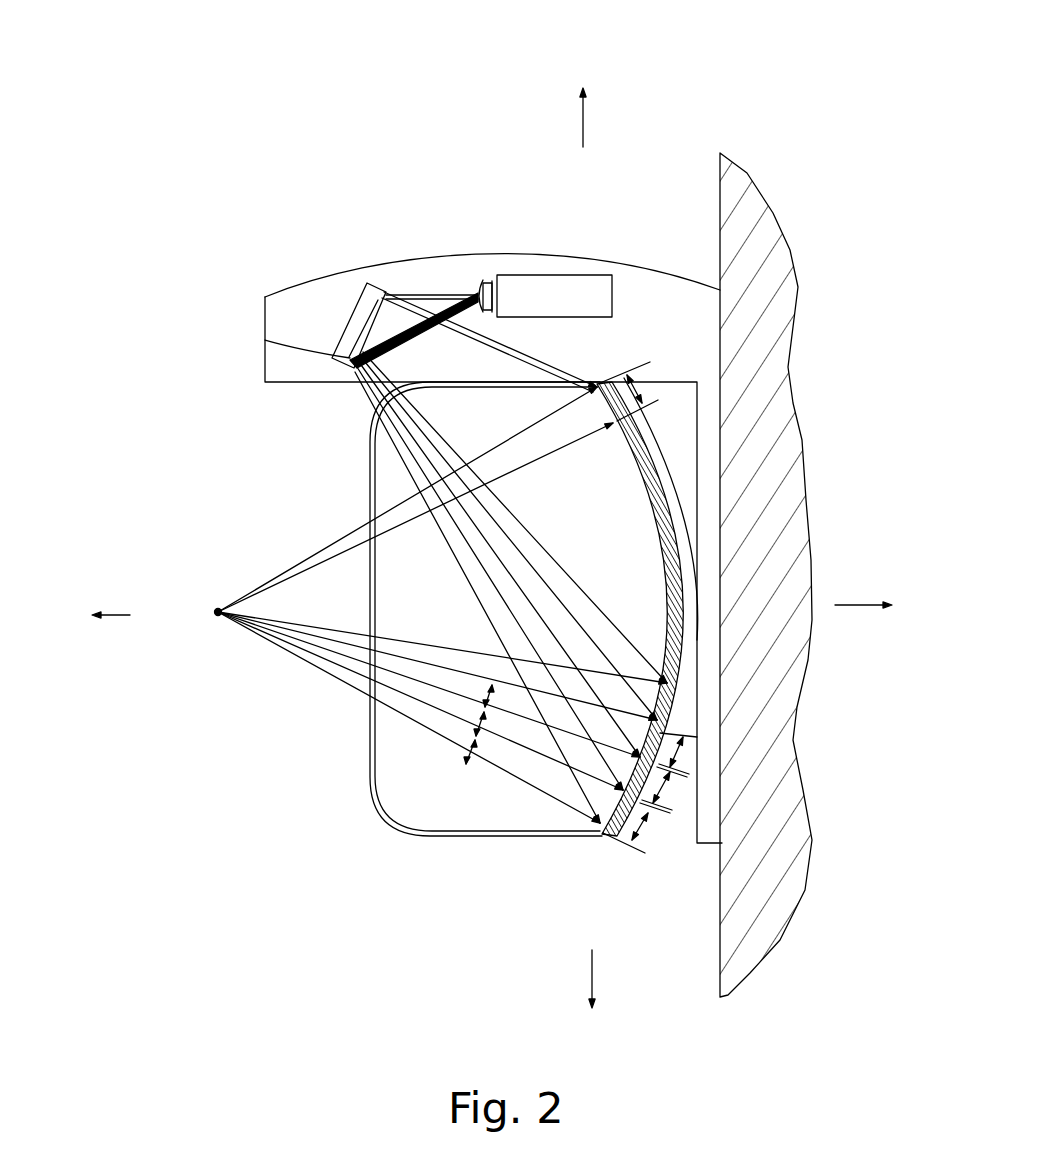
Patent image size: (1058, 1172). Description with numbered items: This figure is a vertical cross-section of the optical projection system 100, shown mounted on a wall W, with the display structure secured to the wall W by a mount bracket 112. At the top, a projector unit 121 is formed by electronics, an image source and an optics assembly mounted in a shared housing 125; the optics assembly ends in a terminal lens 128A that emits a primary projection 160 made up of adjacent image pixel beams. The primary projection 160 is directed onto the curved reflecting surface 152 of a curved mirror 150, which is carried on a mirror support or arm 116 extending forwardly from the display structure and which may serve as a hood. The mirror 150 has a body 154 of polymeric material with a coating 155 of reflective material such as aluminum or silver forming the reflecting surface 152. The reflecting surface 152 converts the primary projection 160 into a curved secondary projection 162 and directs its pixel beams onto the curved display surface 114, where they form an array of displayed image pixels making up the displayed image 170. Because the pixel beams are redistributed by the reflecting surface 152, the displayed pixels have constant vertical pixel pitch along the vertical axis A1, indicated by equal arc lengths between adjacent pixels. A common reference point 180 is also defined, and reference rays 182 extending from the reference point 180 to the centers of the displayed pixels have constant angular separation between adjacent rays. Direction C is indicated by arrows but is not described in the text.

The optical projection system 100 is at (640, 100).
The mount bracket 112 is at (705, 688).
The display surface 114 is at (655, 510).
The mirror support or arm 116 is at (283, 300).
The projector unit 121 is at (572, 252).
The housing 125 is at (600, 290).
The terminal lens 128A is at (478, 289).
The curved projection mirror 150 is at (355, 293).
The curved reflecting surface 152 is at (333, 325).
The body 154 is at (352, 333).
The reflective coating 155 is at (370, 340).
The primary projection 160 is at (452, 300).
The secondary projection 162 is at (450, 422).
The displayed image 170 is at (648, 578).
The common reference point 180 is at (218, 612).
The reference rays 182 is at (280, 660).
The wall W is at (760, 345).
The direction C is at (491, 612).
The vertical axis A1 is at (592, 553).